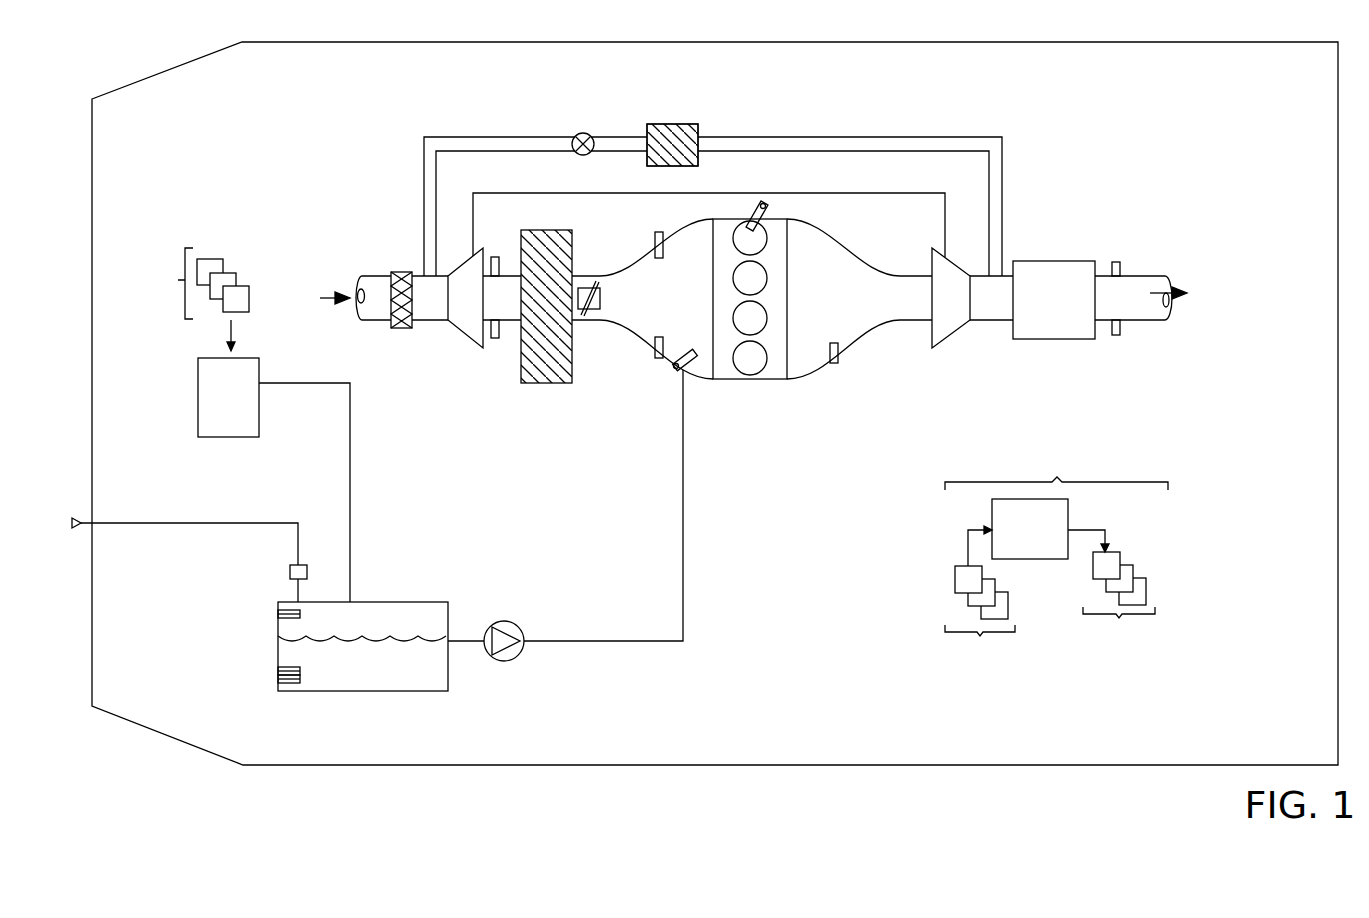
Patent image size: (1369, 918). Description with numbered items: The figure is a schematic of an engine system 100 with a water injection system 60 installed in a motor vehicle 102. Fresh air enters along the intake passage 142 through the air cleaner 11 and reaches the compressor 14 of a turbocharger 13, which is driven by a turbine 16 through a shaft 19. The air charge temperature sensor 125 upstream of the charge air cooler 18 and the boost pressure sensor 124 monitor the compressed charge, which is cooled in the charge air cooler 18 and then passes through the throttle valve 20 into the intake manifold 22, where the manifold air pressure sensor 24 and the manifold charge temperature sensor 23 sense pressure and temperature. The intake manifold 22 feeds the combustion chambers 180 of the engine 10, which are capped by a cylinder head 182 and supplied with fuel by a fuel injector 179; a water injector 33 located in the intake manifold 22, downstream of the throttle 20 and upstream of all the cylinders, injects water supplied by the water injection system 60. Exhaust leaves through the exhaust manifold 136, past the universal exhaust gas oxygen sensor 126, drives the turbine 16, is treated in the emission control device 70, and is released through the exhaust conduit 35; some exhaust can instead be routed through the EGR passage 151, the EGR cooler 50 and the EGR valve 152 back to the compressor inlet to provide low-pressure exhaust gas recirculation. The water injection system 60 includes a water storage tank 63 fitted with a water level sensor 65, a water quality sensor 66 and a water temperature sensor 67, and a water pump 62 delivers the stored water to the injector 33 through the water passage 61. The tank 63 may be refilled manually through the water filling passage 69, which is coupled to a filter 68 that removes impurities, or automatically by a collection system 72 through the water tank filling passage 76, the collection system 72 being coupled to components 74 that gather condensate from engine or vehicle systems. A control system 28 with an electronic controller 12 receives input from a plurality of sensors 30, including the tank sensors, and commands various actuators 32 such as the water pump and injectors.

The engine 10 is at (730, 208).
The air cleaner 11 is at (398, 272).
The controller 12 is at (1021, 538).
The turbocharger 13 is at (505, 183).
The compressor 14 is at (456, 306).
The turbine 16 is at (941, 306).
The charge air cooler 18 is at (545, 230).
The shaft 19 is at (868, 193).
The throttle valve 20 is at (600, 300).
The intake manifold 22 is at (669, 307).
The manifold charge temperature sensor 23 is at (655, 238).
The manifold air pressure sensor 24 is at (655, 343).
The control system 28 is at (1058, 556).
The sensors 30 is at (982, 608).
The actuators 32 is at (1121, 600).
The water injector 33 is at (675, 371).
The exhaust conduit 35 is at (1160, 276).
The EGR cooler 50 is at (680, 124).
The water injection system 60 is at (481, 723).
The water passage 61 is at (683, 496).
The water pump 62 is at (519, 627).
The water storage tank 63 is at (425, 602).
The water level sensor 65 is at (278, 614).
The water quality sensor 66 is at (278, 670).
The water temperature sensor 67 is at (280, 683).
The filter 68 is at (307, 572).
The water filling passage 69 is at (224, 523).
The emission control device 70 is at (1045, 261).
The collection system 72 is at (220, 405).
The components 74 is at (201, 299).
The water tank filling passage 76 is at (350, 480).
The engine system 100 is at (705, 382).
The motor vehicle 102 is at (717, 42).
The boost pressure sensor 124 is at (495, 338).
The air charge temperature sensor 125 is at (493, 257).
The universal exhaust gas oxygen sensor 126 is at (838, 353).
The exhaust manifold 136 is at (845, 307).
The intake passage 142 is at (370, 322).
The EGR passage 151 is at (780, 137).
The EGR valve 152 is at (594, 135).
The fuel injector 179 is at (768, 203).
The combustion chambers 180 is at (767, 238).
The cylinder head 182 is at (787, 304).